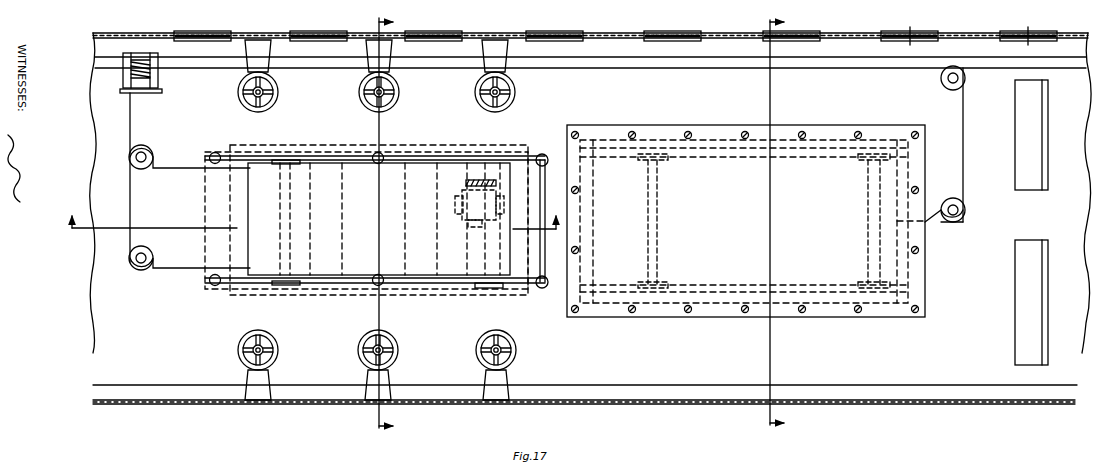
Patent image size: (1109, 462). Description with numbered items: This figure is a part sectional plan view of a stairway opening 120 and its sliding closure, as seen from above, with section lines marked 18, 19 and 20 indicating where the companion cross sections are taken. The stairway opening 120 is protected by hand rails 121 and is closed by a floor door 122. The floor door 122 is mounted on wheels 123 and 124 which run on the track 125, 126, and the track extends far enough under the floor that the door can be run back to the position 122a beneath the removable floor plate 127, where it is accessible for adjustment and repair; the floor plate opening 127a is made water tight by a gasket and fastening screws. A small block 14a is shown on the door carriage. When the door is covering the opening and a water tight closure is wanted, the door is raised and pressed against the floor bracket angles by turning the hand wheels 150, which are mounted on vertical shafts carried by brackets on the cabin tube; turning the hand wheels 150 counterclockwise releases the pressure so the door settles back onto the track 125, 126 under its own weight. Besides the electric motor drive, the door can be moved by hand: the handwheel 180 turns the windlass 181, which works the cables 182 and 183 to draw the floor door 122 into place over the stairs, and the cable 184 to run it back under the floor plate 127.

The carriage block 14a is at (455, 203).
The section line 18 is at (768, 221).
The section line 19 is at (377, 224).
The section line 20 is at (311, 231).
The stairway opening 120 is at (248, 205).
The hand rails 121 is at (548, 173).
The floor door 122 is at (345, 148).
The floor door retracted position 122a is at (673, 148).
The wheels 123 is at (295, 150).
The wheels 124 is at (296, 297).
The track 125 is at (545, 153).
The track 126 is at (556, 298).
The removable floor plate 127 is at (722, 128).
The floor plate opening 127a is at (815, 142).
The hand wheels 150 is at (280, 92).
The handwheel 180 is at (152, 93).
The windlass 181 is at (123, 68).
The cable 182 is at (180, 170).
The cable 183 is at (172, 272).
The cable 184 is at (962, 117).